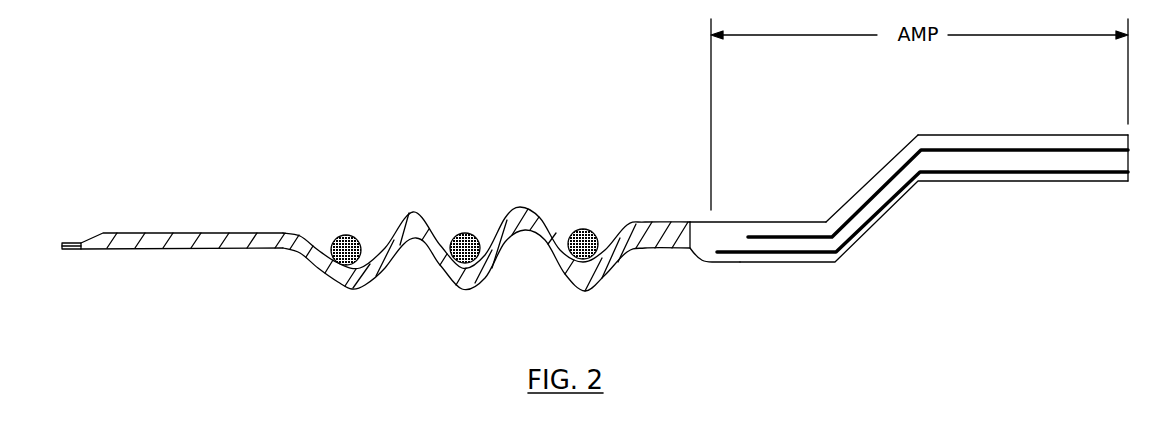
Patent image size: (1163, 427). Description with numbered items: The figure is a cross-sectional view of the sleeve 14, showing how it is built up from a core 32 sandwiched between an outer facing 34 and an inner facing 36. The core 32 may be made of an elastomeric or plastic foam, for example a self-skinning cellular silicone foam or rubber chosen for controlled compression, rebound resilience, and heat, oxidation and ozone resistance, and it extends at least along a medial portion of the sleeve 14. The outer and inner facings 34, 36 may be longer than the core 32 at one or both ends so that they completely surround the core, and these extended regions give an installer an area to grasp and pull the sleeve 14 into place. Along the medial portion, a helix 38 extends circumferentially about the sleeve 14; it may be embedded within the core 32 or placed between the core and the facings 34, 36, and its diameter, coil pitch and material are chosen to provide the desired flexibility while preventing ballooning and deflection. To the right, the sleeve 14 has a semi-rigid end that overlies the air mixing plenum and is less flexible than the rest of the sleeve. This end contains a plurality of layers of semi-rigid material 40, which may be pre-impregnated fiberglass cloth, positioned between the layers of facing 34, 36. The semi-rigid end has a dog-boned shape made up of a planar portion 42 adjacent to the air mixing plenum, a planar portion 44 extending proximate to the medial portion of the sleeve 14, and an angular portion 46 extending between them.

The sleeve 14 is at (166, 229).
The core 32 is at (405, 222).
The outer facing 34 is at (408, 231).
The inner facing 36 is at (415, 237).
The helix 38 is at (337, 237).
The semi-rigid material 40 is at (1073, 150).
The planar portion 42 is at (1022, 135).
The planar portion 44 is at (767, 222).
The angular portion 46 is at (873, 180).